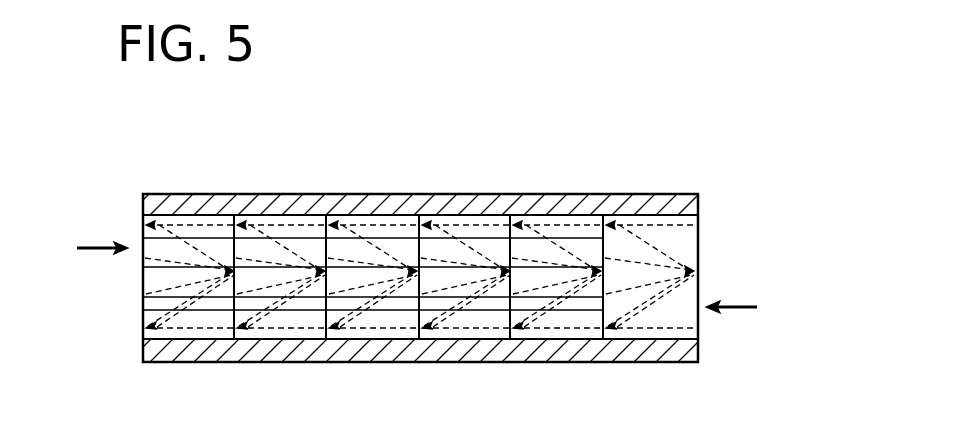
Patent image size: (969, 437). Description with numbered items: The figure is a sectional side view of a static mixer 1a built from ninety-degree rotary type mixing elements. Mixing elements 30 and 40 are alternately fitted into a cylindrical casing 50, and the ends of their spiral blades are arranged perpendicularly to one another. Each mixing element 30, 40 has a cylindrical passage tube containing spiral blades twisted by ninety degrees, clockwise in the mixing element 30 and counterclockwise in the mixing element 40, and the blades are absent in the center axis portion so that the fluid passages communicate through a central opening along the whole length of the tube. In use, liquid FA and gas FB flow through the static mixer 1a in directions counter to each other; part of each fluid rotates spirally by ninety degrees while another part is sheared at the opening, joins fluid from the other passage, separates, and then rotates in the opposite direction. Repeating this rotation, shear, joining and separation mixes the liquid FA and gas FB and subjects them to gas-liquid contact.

The static mixer 1a is at (708, 263).
The cylindrical casing 50 is at (590, 204).
The mixing element 30 is at (567, 380).
The mixing element 40 is at (658, 380).
The liquid FA is at (79, 250).
The gas FB is at (751, 308).